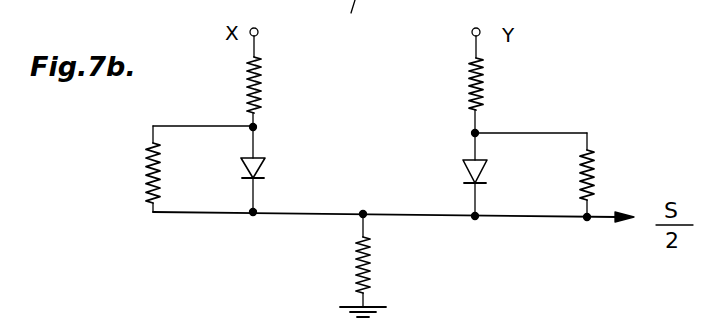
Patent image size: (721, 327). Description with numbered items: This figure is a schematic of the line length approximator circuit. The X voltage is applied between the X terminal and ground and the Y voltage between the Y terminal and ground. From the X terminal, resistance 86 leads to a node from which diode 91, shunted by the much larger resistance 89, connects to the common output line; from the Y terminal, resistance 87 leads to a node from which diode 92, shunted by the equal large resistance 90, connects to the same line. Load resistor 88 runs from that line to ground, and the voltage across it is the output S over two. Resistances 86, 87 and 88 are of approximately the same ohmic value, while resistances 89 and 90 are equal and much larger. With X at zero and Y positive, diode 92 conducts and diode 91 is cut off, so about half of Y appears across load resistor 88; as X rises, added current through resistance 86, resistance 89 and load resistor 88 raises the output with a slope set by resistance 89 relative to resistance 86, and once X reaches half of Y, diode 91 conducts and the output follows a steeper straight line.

The resistance 86 is at (262, 84).
The resistance 87 is at (485, 80).
The load resistor 88 is at (371, 262).
The resistance 89 is at (146, 172).
The resistance 90 is at (595, 180).
The diode 91 is at (262, 166).
The diode 92 is at (482, 170).